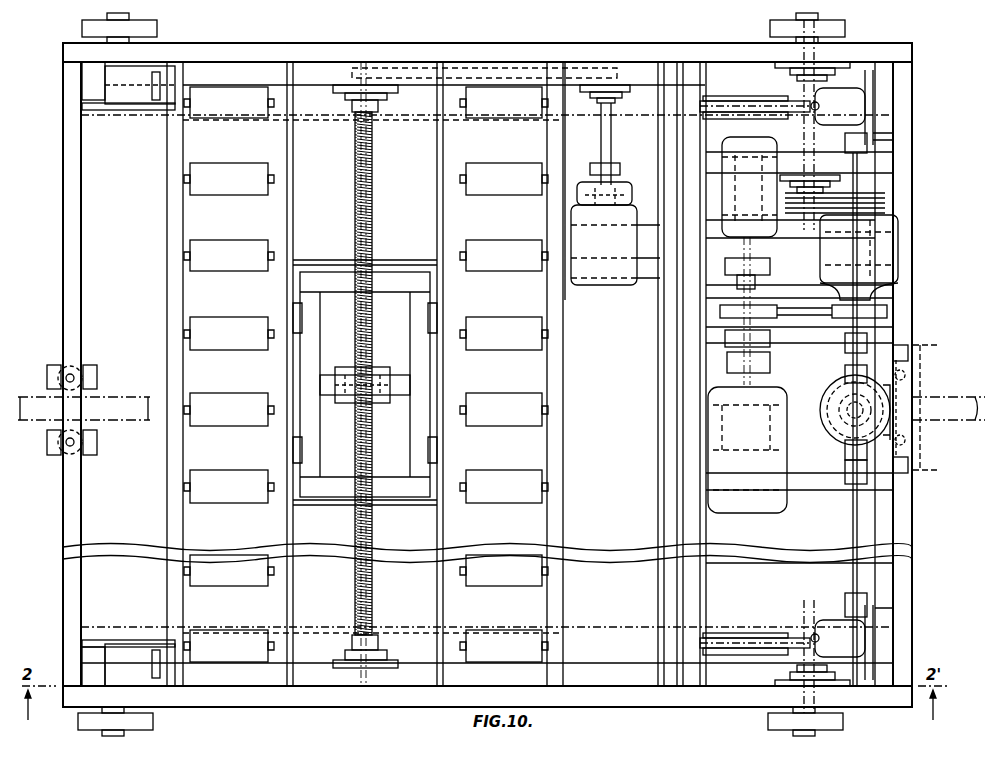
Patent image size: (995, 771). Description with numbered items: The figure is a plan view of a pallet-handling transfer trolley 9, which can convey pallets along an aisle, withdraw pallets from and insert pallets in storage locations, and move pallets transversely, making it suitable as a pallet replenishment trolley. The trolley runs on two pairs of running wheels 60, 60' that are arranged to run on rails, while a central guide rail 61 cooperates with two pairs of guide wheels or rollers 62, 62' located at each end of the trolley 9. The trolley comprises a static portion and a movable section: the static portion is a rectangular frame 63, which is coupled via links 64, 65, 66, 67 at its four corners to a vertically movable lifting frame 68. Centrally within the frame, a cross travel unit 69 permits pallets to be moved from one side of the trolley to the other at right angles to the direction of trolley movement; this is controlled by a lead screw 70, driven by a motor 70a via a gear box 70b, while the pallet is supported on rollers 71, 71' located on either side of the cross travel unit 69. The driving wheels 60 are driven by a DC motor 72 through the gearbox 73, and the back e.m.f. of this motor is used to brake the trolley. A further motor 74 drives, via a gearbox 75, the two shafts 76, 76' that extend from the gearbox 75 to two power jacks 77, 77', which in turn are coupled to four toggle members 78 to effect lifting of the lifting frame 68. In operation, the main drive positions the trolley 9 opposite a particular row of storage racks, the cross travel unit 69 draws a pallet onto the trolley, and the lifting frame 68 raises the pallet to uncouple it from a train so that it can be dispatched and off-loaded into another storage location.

The transfer trolley 9 is at (62, 190).
The running wheels 60 is at (824, 374).
The running wheels 60' is at (135, 374).
The central guide rail 61 is at (130, 422).
The guide wheels or rollers 62 is at (924, 409).
The guide wheels or rollers 62' is at (62, 406).
The rectangular frame 63 is at (526, 45).
The link 64 is at (106, 641).
The link 65 is at (137, 108).
The link 66 is at (722, 113).
The link 67 is at (728, 636).
The lifting frame 68 is at (338, 72).
The cross travel unit 69 is at (338, 489).
The lead screw 70 is at (374, 188).
The motor 70a is at (606, 270).
The gear box 70b is at (623, 187).
The rollers 71 is at (504, 374).
The rollers 71' is at (229, 374).
The DC motor 72 is at (740, 427).
The gearbox 73 is at (872, 268).
The motor 74 is at (842, 433).
The gearbox 75 is at (832, 396).
The shaft 76 is at (890, 409).
The shaft 76' is at (892, 538).
The power jack 77 is at (834, 105).
The power jack 77' is at (824, 642).
The toggle members 78 is at (120, 110).